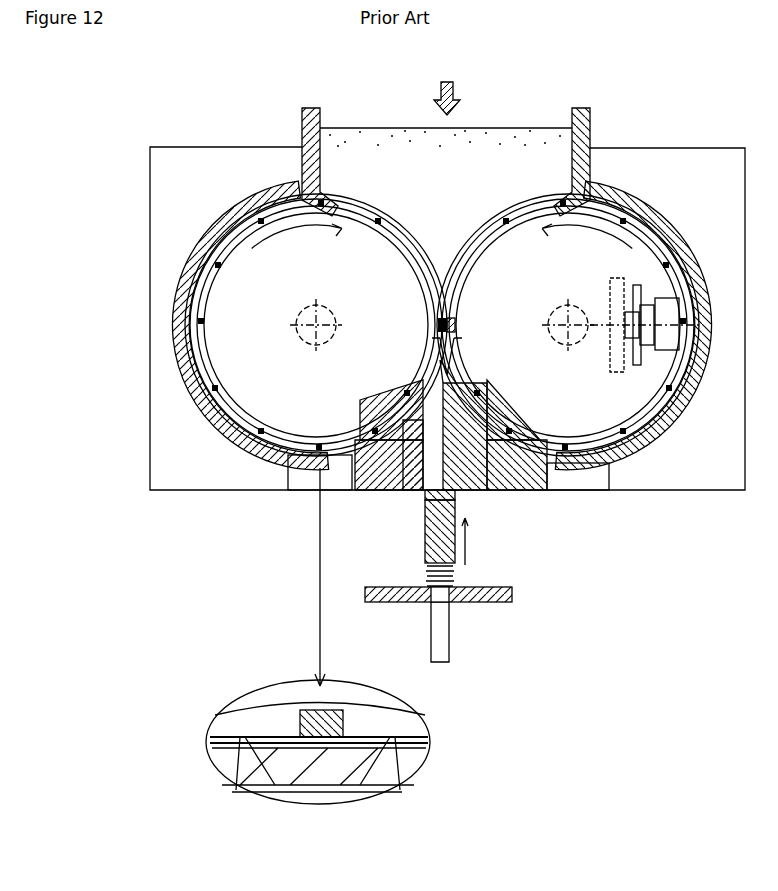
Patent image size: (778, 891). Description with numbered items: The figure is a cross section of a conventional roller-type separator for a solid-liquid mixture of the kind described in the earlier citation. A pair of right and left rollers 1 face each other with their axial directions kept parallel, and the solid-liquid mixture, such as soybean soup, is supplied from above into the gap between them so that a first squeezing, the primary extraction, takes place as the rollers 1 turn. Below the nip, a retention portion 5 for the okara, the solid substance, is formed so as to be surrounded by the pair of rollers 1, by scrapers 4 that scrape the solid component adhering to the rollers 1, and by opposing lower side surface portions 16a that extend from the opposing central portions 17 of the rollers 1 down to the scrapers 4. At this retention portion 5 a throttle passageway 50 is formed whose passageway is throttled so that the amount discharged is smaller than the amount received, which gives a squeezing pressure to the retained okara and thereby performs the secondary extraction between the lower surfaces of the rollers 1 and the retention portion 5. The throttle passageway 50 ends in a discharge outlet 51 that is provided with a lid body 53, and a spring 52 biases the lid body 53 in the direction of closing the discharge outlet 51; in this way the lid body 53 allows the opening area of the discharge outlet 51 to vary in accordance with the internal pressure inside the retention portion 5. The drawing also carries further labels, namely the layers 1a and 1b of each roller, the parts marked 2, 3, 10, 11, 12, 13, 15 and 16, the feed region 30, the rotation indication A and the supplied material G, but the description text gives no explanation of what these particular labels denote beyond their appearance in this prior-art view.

The roller 1 is at (198, 172).
The outer layer 1a is at (262, 225).
The intermediate layer 1b is at (228, 240).
The roller shell 2 is at (188, 370).
The roller core sleeve 3 is at (245, 450).
The scraper 4 is at (398, 400).
The retention portion 5 is at (440, 360).
The roller 10 is at (210, 290).
The end member 11 is at (240, 790).
The bearing 12 is at (645, 300).
The shaft 13 is at (640, 345).
The roller surface 15 is at (418, 240).
The support block 16 is at (398, 420).
The lower side surface portion 16a is at (432, 345).
The opposing central portion 17 is at (462, 320).
The hopper 30 is at (462, 180).
The throttle passageway 50 is at (460, 360).
The discharge outlet 51 is at (428, 495).
The spring 52 is at (452, 580).
The lid body 53 is at (425, 545).
The rotation direction A is at (442, 242).
The powder material G is at (512, 140).